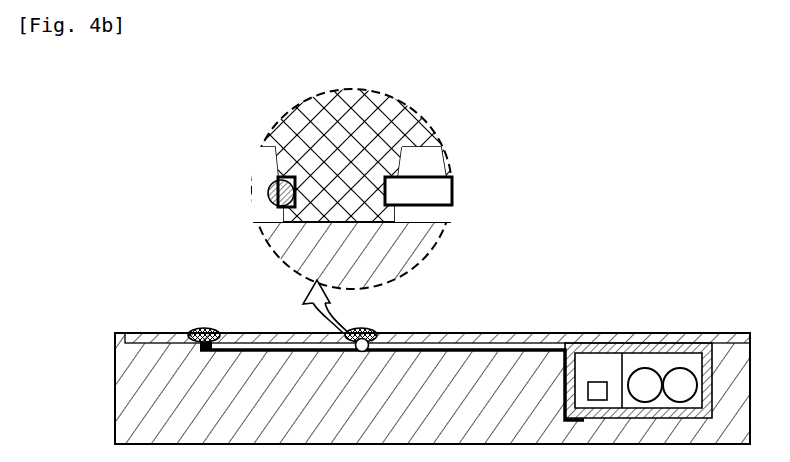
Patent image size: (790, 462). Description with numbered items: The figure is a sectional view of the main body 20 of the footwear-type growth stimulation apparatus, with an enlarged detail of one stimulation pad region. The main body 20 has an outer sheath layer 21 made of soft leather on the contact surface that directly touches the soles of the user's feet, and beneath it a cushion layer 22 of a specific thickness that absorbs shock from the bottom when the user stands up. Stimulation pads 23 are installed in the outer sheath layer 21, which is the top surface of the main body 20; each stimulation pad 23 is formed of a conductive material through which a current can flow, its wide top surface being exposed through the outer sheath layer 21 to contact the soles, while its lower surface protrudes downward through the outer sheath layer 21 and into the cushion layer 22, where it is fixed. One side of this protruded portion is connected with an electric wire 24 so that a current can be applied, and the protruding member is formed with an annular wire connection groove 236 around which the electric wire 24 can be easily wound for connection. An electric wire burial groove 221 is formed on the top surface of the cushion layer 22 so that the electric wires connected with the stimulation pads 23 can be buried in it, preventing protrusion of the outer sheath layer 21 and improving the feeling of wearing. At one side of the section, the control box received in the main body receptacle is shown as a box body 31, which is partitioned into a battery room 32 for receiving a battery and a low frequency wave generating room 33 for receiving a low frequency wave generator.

The main body 20 is at (120, 250).
The outer sheath layer 21 is at (148, 334).
The cushion layer 22 is at (132, 389).
The stimulation pad 23 is at (337, 132).
The electric wire 24 is at (266, 183).
The electric wire burial groove 221 is at (417, 160).
The annular wire connection groove 236 is at (385, 193).
The box body 31 is at (630, 363).
The battery room 32 is at (665, 363).
The low frequency wave generating room 33 is at (590, 363).